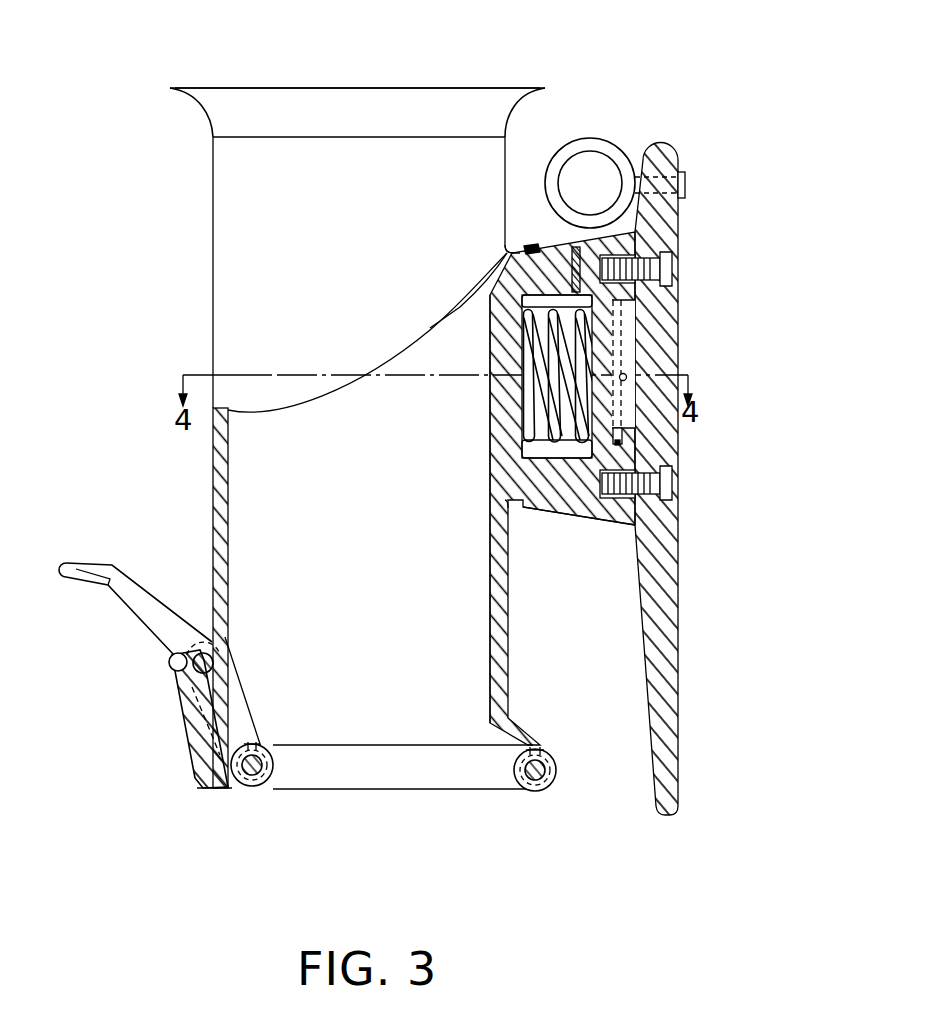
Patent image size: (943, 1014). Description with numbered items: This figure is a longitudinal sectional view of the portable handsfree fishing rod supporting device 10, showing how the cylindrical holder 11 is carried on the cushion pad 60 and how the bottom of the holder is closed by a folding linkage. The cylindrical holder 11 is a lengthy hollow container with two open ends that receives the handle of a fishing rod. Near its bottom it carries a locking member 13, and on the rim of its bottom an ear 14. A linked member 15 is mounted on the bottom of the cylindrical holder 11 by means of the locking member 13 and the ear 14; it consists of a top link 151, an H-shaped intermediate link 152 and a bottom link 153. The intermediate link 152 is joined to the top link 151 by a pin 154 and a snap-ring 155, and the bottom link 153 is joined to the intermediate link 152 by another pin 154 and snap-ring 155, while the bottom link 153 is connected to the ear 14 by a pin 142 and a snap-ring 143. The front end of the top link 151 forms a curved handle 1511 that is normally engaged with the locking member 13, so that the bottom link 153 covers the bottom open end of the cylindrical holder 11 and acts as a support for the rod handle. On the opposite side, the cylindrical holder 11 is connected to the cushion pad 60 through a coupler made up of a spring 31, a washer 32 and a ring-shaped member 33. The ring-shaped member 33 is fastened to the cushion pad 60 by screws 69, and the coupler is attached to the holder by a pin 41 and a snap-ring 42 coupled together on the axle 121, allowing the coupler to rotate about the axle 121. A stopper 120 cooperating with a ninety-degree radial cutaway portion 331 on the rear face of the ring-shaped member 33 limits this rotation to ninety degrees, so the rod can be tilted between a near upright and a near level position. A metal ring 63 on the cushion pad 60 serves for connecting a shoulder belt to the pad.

The fishing rod supporting device 10 is at (190, 224).
The cylindrical holder 11 is at (437, 100).
The locking member 13 is at (180, 695).
The ear 14 is at (557, 768).
The linked member 15 is at (180, 598).
The spring 31 is at (553, 447).
The washer 32 is at (578, 518).
The ring-shaped member 33 is at (601, 518).
The pin 41 is at (626, 377).
The snap-ring 42 is at (622, 438).
The cushion pad 60 is at (657, 606).
The metal ring 63 is at (601, 139).
The screw 69 is at (675, 262).
The stopper 120 is at (505, 250).
The axle 121 is at (602, 343).
The pin 142 is at (527, 779).
The snap-ring 143 is at (538, 748).
The top link 151 is at (130, 596).
The intermediate link 152 is at (243, 710).
The bottom link 153 is at (365, 790).
The pin 154 is at (194, 663).
The snap-ring 155 is at (254, 745).
The 90-degree radial cutaway portion 331 is at (525, 248).
The curved handle 1511 is at (76, 562).